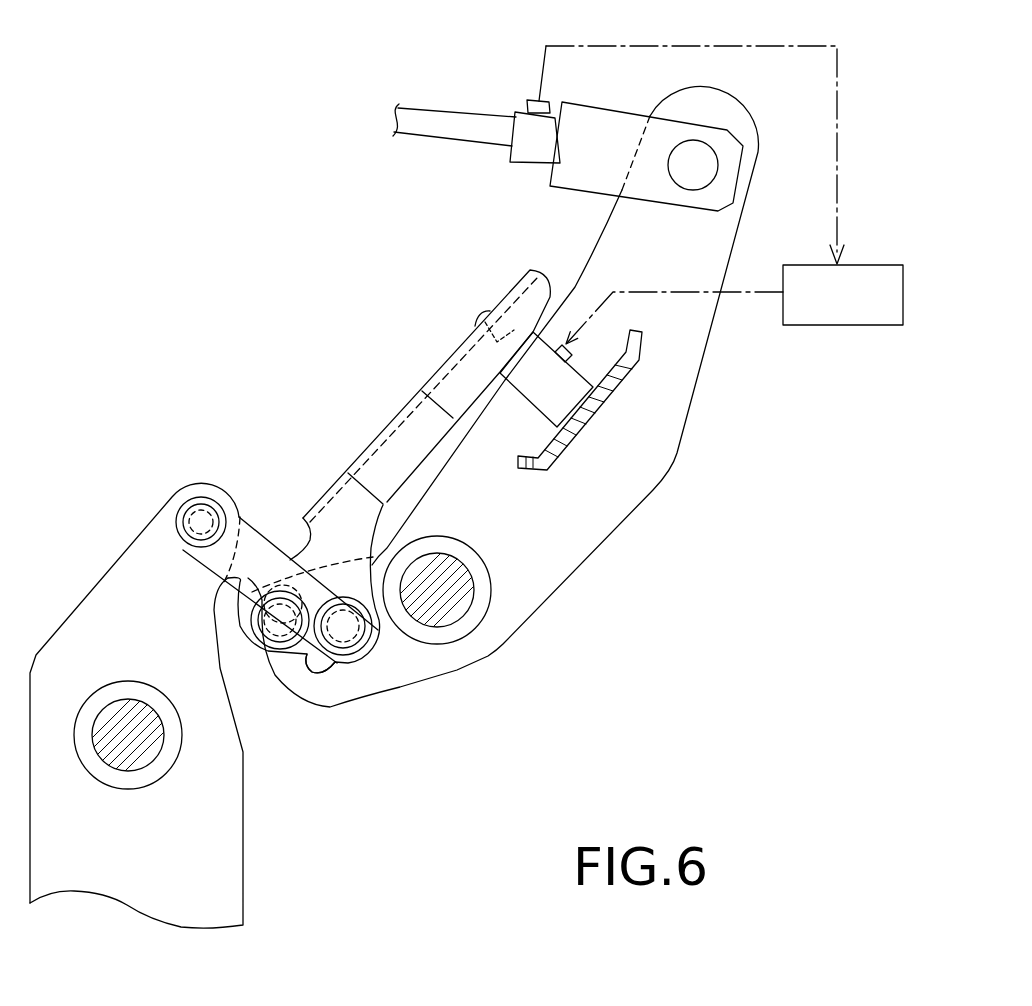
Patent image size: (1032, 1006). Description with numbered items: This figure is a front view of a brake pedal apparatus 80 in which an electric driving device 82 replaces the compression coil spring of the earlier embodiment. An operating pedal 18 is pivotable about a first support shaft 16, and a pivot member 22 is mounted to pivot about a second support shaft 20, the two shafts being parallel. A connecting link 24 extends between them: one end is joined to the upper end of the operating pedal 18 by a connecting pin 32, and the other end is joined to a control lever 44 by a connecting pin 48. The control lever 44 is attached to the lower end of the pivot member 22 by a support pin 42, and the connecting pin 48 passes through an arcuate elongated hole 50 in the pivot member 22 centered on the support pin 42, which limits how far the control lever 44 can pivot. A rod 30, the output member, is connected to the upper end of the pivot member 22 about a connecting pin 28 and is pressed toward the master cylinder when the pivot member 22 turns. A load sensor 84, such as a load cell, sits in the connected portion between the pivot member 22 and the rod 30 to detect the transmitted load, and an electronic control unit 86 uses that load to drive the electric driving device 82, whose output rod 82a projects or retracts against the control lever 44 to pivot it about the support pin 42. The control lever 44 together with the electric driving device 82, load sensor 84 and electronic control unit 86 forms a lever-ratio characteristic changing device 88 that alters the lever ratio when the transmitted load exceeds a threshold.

The first support shaft 16 is at (147, 752).
The operating pedal 18 is at (224, 902).
The second support shaft 20 is at (453, 608).
The pivot member 22 is at (572, 550).
The connecting link 24 is at (260, 543).
The connecting pin 28 is at (703, 165).
The rod 30 is at (433, 130).
The connecting pin 32 is at (193, 520).
The support pin 42 is at (273, 623).
The control lever 44 is at (453, 375).
The connecting pin 48 is at (350, 628).
The elongated hole 50 is at (333, 668).
The brake pedal apparatus 80 is at (283, 133).
The electric driving device 82 is at (572, 390).
The output rod 82a is at (508, 338).
The load sensor 84 is at (523, 118).
The electronic control unit 86 is at (876, 314).
The lever-ratio characteristic changing device 88 is at (378, 400).